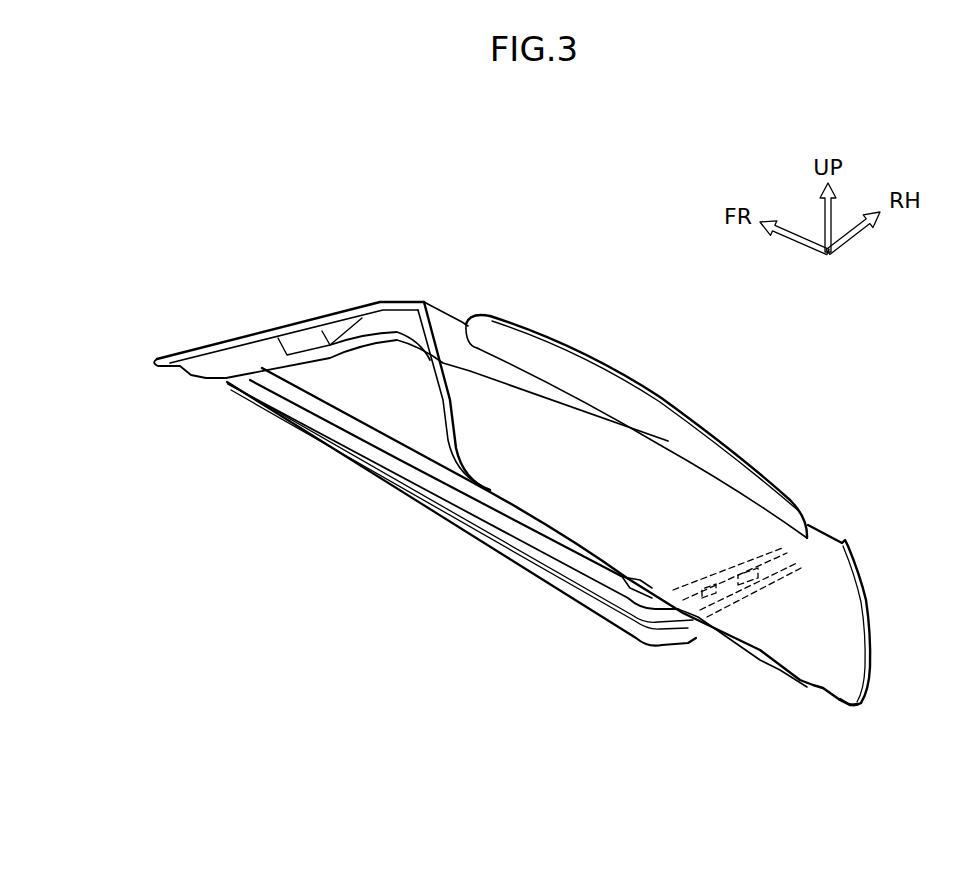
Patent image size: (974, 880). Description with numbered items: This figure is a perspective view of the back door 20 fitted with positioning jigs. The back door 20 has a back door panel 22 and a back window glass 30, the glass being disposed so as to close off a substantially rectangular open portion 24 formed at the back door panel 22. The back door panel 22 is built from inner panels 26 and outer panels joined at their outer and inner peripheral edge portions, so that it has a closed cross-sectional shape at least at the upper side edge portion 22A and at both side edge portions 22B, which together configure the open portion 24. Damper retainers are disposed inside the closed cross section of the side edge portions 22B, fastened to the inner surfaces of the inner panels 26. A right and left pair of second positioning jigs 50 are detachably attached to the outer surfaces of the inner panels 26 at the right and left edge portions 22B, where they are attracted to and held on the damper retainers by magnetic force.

The back door 20 is at (453, 286).
The back door panel 22 is at (837, 618).
The upper side edge portion 22A is at (490, 543).
The side edge portion 22B is at (298, 328).
The open portion 24 is at (413, 447).
The inner panel 26 is at (250, 352).
The back window glass 30 is at (373, 400).
The second positioning jig 50 is at (305, 357).